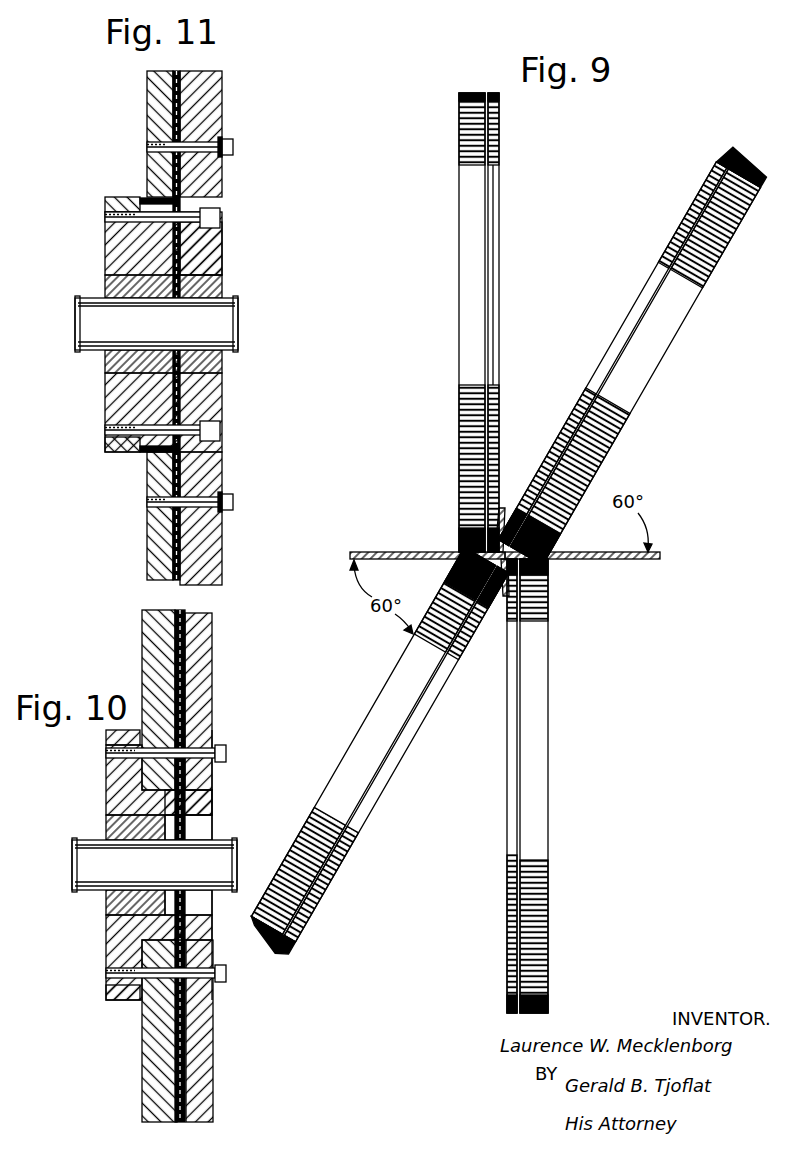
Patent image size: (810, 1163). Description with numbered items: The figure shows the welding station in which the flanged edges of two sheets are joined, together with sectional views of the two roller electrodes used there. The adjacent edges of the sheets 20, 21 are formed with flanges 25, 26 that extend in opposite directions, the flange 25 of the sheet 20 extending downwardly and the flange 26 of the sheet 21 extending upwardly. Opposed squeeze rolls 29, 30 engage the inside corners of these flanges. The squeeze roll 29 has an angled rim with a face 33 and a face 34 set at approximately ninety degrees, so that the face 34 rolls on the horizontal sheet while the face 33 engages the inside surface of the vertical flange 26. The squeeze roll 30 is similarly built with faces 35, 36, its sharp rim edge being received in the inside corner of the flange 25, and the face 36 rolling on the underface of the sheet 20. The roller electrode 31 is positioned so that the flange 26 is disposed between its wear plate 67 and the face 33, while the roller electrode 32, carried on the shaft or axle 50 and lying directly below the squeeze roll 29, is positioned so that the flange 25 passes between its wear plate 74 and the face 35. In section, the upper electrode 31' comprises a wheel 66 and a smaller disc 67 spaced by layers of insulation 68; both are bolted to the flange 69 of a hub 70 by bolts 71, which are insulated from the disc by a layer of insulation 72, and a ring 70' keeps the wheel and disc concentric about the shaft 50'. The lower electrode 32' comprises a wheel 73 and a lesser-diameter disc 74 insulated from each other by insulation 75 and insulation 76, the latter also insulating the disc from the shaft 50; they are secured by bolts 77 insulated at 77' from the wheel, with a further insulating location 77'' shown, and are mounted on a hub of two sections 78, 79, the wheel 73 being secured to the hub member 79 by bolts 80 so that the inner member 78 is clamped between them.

In FIG. 9, the sheet 20 is at (419, 552).
In FIG. 9, the sheet 21 is at (648, 552).
In FIG. 9, the flange 25 is at (500, 600).
In FIG. 9, the flange 26 is at (500, 514).
In FIG. 9, the squeeze roll 29 is at (634, 354).
In FIG. 9, the squeeze roll 30 is at (374, 754).
In FIG. 9, the roller electrode 31 is at (476, 322).
In FIG. 10, the roller electrode 31' is at (184, 866).
In FIG. 9, the roller electrode 32 is at (534, 786).
In FIG. 11, the roller electrode 32' is at (186, 304).
In FIG. 9, the face 33 is at (662, 268).
In FIG. 9, the face 34 is at (700, 289).
In FIG. 9, the face 35 is at (440, 679).
In FIG. 9, the face 36 is at (405, 690).
In FIG. 11, the shaft or axle 50 is at (180, 324).
In FIG. 10, the shaft or axle 50' is at (175, 865).
In FIG. 9, the wheel 66 is at (459, 326).
In FIG. 10, the wheel 66 is at (150, 626).
In FIG. 9, the wear plate or disc 67 is at (500, 300).
In FIG. 10, the wear plate or disc 67 is at (212, 647).
In FIG. 10, the insulation 68 is at (190, 1044).
In FIG. 10, the flange 69 is at (126, 998).
In FIG. 10, the hub 70 is at (129, 780).
In FIG. 10, the ring 70' is at (222, 795).
In FIG. 10, the bolts 71 is at (228, 753).
In FIG. 10, the insulation 72 is at (215, 738).
In FIG. 9, the wheel 73 is at (540, 823).
In FIG. 11, the wheel 73 is at (224, 182).
In FIG. 9, the wear plate or disc 74 is at (508, 846).
In FIG. 11, the wear plate or disc 74 is at (147, 118).
In FIG. 11, the insulation 75 is at (178, 74).
In FIG. 11, the insulation 76 is at (140, 196).
In FIG. 11, the bolts 77 is at (216, 325).
In FIG. 11, the insulation 77' is at (253, 488).
In FIG. 11, the bolt washer 77'' is at (267, 131).
In FIG. 11, the hub section 78 is at (205, 263).
In FIG. 11, the hub member 79 is at (105, 257).
In FIG. 11, the bolts 80 is at (222, 217).